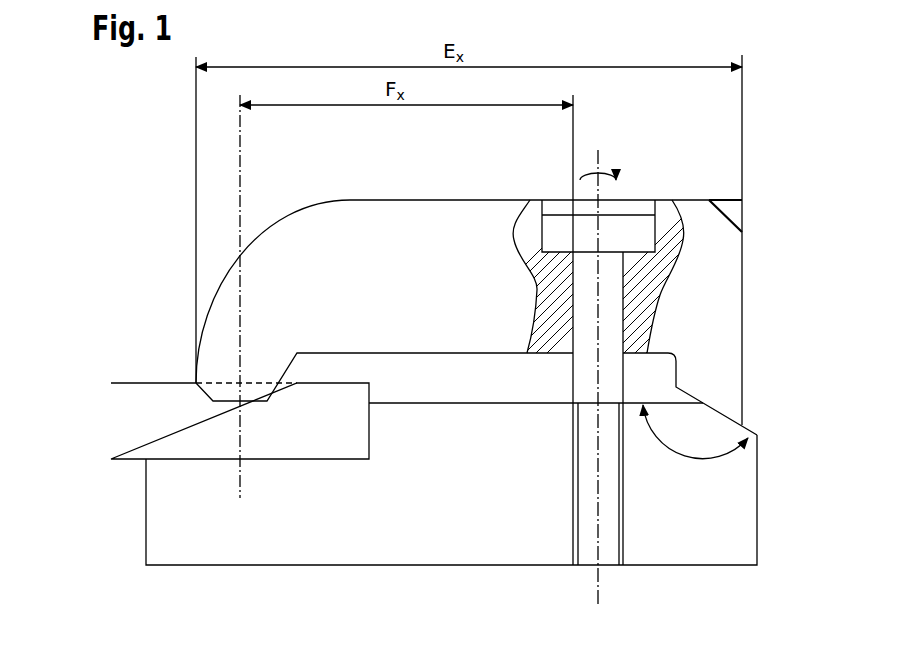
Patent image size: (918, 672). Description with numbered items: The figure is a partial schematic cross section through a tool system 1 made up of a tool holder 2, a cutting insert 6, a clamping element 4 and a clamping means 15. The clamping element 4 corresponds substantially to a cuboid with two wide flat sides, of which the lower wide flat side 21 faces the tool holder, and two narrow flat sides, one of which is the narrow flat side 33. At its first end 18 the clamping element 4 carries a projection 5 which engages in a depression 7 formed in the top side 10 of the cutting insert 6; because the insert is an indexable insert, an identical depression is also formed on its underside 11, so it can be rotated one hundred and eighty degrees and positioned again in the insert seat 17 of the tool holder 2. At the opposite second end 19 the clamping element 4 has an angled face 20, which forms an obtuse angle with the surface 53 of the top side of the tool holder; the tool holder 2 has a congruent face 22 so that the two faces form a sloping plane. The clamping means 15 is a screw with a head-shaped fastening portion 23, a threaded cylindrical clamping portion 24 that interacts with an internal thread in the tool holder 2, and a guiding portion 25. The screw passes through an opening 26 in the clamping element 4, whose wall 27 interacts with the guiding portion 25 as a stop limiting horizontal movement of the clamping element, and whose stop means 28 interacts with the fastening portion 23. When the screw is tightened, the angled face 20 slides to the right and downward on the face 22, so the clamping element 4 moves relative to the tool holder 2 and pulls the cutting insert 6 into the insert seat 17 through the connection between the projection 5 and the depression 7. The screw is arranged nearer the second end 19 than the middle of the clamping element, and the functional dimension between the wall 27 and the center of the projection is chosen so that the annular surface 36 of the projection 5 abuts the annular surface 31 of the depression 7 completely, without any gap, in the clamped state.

The tool system 1 is at (118, 146).
The tool holder 2 is at (692, 502).
The clamping element 4 is at (402, 276).
The projection 5 is at (218, 372).
The cutting insert 6 is at (154, 434).
The depression 7 is at (230, 398).
The top side 10 is at (340, 378).
The underside 11 is at (125, 461).
The clamping means 15 is at (612, 312).
The insert seat 17 is at (322, 464).
The first end 18 is at (183, 372).
The second end 19 is at (753, 414).
The angled face 20 is at (685, 415).
The wide flat side 21 is at (497, 353).
The face 22 is at (757, 435).
The fastening portion 23 is at (637, 246).
The clamping portion 24 is at (620, 525).
The guiding portion 25 is at (625, 244).
The opening 26 is at (686, 198).
The wall 27 is at (573, 323).
The stop means 28 is at (643, 252).
The annular surface 31 is at (131, 377).
The narrow flat side 33 is at (718, 297).
The annular surface 36 is at (205, 395).
The surface 53 is at (427, 402).